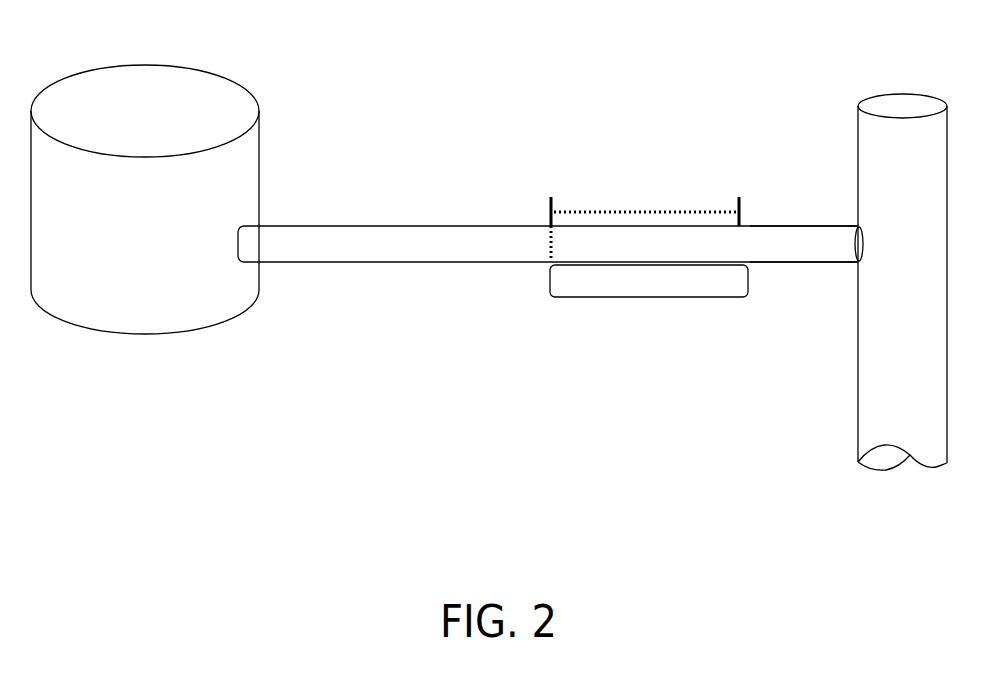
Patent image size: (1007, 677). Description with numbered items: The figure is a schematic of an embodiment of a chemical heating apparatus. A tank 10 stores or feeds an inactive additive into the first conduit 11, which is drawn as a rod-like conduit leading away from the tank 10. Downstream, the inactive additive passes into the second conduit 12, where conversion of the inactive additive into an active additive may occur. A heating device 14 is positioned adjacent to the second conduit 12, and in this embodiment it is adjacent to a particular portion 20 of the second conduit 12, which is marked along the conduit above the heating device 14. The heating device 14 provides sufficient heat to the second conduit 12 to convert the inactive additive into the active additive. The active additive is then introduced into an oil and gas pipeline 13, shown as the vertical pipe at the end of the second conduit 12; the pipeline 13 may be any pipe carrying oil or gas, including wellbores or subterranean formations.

The tank 10 is at (210, 97).
The first conduit 11 is at (337, 238).
The second conduit 12 is at (770, 238).
The oil and gas pipeline 13 is at (875, 135).
The heating device 14 is at (572, 280).
The portion of the second conduit 20 is at (617, 212).